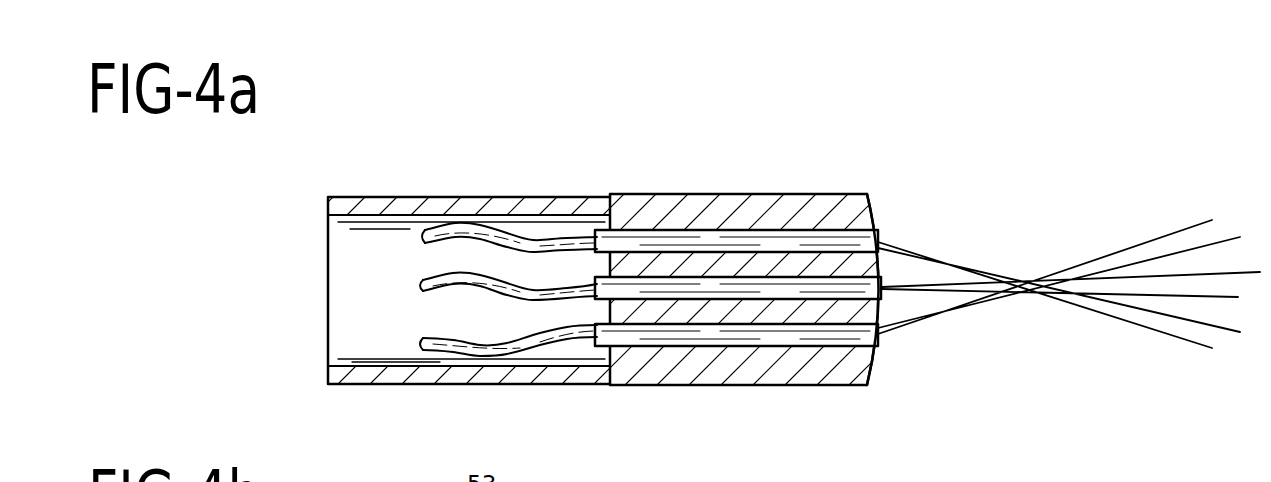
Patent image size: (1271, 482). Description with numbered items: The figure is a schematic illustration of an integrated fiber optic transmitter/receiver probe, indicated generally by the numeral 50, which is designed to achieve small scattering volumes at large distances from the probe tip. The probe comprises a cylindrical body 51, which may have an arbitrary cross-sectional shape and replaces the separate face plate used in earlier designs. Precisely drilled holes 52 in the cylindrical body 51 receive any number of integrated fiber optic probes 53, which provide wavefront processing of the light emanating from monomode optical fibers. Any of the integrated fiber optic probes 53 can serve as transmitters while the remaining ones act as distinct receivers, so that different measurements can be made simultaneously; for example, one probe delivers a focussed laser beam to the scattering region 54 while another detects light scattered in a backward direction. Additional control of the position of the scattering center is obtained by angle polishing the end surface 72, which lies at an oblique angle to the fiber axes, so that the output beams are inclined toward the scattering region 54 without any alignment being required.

The light guide assembly 50 is at (463, 168).
The cylindrical body 51 is at (730, 193).
The precisely drilled holes 52 is at (687, 273).
The integrated fiber optic probes (IFOPs) 53 is at (420, 235).
The scattering region 54 is at (1032, 283).
The end surface 72 is at (865, 213).